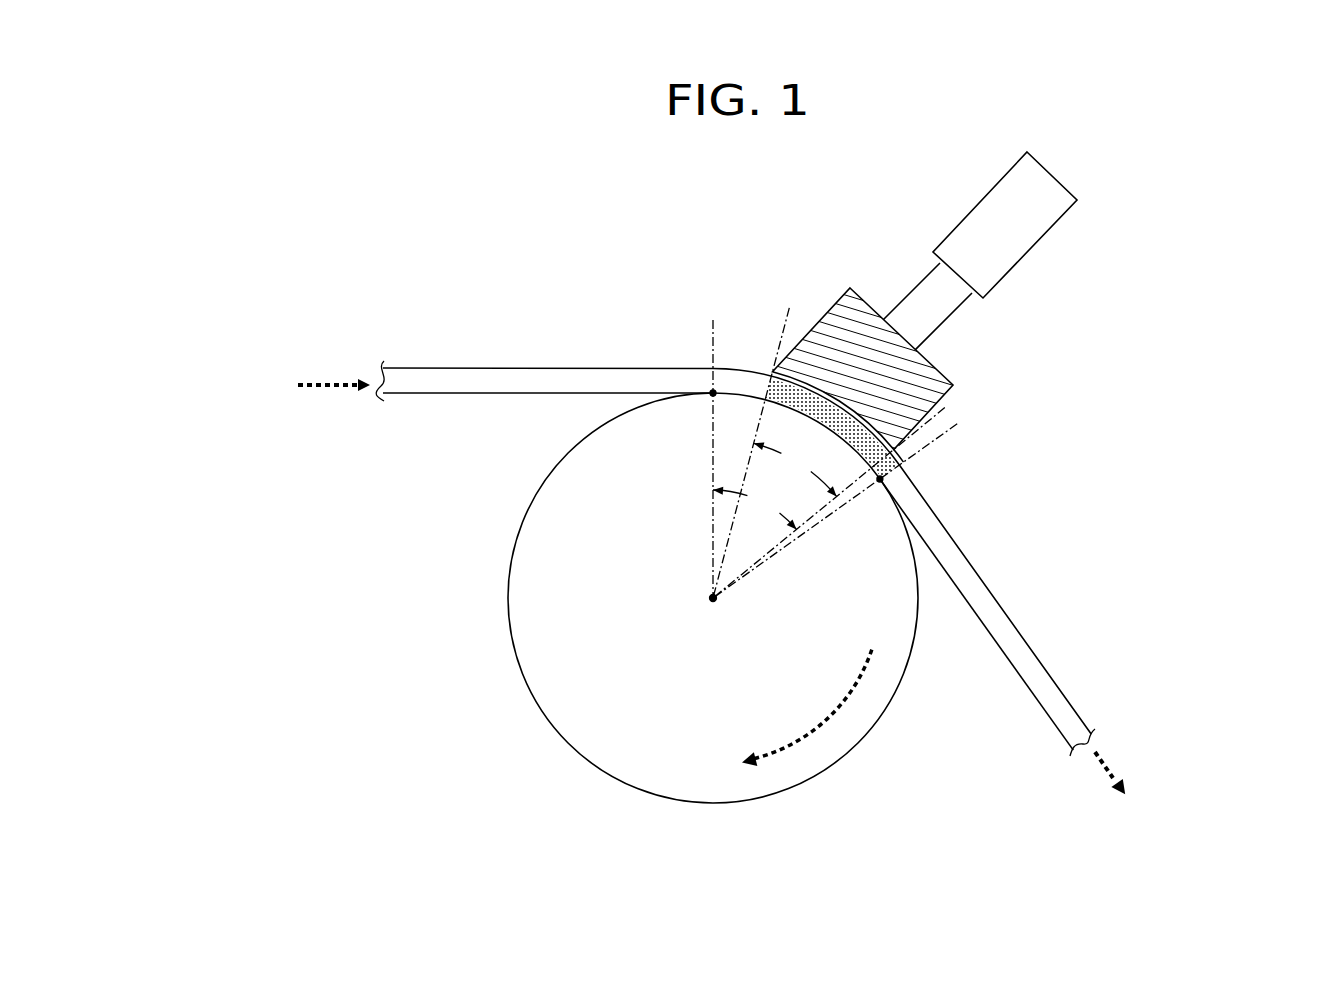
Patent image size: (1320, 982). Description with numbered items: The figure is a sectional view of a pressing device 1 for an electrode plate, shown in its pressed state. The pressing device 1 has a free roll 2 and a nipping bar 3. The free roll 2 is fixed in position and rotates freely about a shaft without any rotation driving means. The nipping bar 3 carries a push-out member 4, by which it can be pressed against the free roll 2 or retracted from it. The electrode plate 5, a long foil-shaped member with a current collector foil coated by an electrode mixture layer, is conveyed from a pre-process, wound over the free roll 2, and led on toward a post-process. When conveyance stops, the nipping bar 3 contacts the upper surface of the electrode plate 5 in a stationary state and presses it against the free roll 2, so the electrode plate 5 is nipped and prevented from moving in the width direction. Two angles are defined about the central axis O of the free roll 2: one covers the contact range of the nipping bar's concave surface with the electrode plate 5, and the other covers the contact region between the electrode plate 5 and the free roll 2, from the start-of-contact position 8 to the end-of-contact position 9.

The pressing device 1 is at (1078, 420).
The free roll 2 is at (527, 684).
The nipping bar 3 is at (857, 293).
The push-out member 4 is at (1000, 267).
The electrode plate 5 is at (1017, 630).
The start-of-contact position 8 is at (713, 393).
The end-of-contact position 9 is at (880, 480).
The central axis O is at (713, 598).